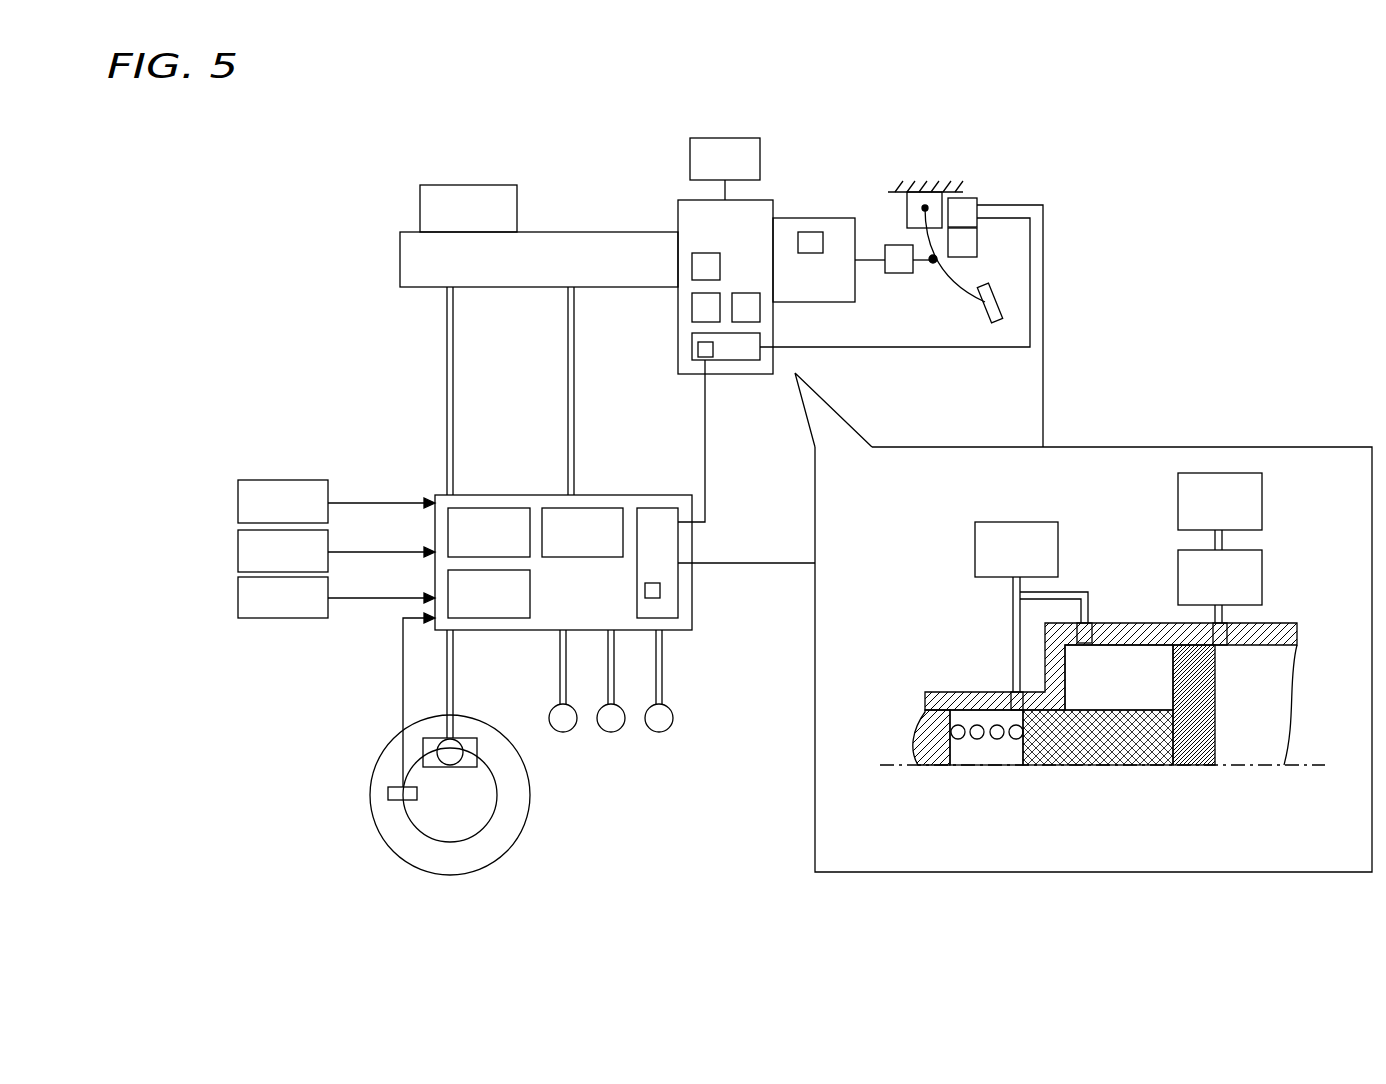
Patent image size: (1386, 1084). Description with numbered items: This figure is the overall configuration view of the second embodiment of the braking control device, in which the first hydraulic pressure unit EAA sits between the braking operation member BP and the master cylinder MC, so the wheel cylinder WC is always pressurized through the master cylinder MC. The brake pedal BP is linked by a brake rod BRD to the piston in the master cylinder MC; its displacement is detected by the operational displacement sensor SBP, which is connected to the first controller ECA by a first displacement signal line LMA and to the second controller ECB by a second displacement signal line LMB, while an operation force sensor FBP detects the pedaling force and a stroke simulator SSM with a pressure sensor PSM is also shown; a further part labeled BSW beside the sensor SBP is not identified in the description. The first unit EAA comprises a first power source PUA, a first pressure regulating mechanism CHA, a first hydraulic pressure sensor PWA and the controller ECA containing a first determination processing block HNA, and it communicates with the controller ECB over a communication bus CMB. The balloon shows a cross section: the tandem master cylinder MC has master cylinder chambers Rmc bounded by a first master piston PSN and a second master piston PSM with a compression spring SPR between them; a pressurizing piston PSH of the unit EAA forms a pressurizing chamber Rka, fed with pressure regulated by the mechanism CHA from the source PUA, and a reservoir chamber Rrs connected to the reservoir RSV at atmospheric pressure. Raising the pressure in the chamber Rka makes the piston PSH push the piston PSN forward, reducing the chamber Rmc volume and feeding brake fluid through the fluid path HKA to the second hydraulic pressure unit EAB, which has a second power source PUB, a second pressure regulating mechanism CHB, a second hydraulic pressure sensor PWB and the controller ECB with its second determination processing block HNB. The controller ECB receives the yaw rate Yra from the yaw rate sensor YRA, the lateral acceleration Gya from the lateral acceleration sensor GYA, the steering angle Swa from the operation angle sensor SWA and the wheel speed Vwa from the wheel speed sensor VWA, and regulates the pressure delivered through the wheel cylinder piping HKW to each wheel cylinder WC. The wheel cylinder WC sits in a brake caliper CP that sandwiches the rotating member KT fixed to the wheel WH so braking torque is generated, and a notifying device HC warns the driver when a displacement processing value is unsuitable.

The notifying device HC is at (725, 169).
The first hydraulic pressure unit EAA is at (725, 287).
The first power source PUA is at (692, 262).
The first pressure regulating mechanism CHA is at (692, 306).
The first hydraulic pressure sensor PWA is at (760, 307).
The first determination processing block HNA is at (698, 350).
The reservoir RSV is at (756, 447).
The master cylinder MC is at (940, 690).
The fluid path HKA is at (568, 398).
The second hydraulic pressure unit EAB is at (515, 495).
The second power source PUB is at (489, 532).
The second hydraulic pressure sensor PWB is at (582, 532).
The second pressure regulating mechanism CHB is at (489, 594).
The second determination processing block HNB is at (645, 592).
The second controller ECB is at (662, 592).
The communication bus CMB is at (731, 441).
The first controller ECA is at (723, 352).
The second displacement signal line LMB is at (757, 563).
The first displacement signal line LMA is at (967, 350).
The yaw rate sensor YRA is at (283, 501).
The lateral acceleration sensor GYA is at (283, 551).
The operation angle sensor SWA is at (283, 597).
The yaw rate Yra is at (381, 486).
The lateral acceleration Gya is at (381, 535).
The steering angle Swa is at (381, 583).
The wheel speed Vwa is at (380, 700).
The fluid path HKW is at (453, 675).
The wheel cylinder WC is at (673, 720).
The wheel WH is at (372, 838).
The brake caliper CP is at (470, 745).
The rotating member KT is at (449, 794).
The wheel speed sensor VWA is at (395, 790).
The stroke simulator SSM is at (829, 260).
The second master piston PSM is at (811, 230).
The operation force sensor FBP is at (900, 280).
The brake rod BRD is at (868, 255).
The braking operation member BP is at (945, 260).
The operational displacement sensor SBP is at (996, 208).
The brake switch BSW is at (977, 247).
The reservoir chamber Rrs is at (1130, 650).
The pressurizing piston PSH is at (1187, 770).
The first master piston PSN is at (1065, 752).
The master cylinder chamber Rmc is at (975, 752).
The compression spring SPR is at (990, 720).
The pressurizing chamber Rka is at (1262, 760).